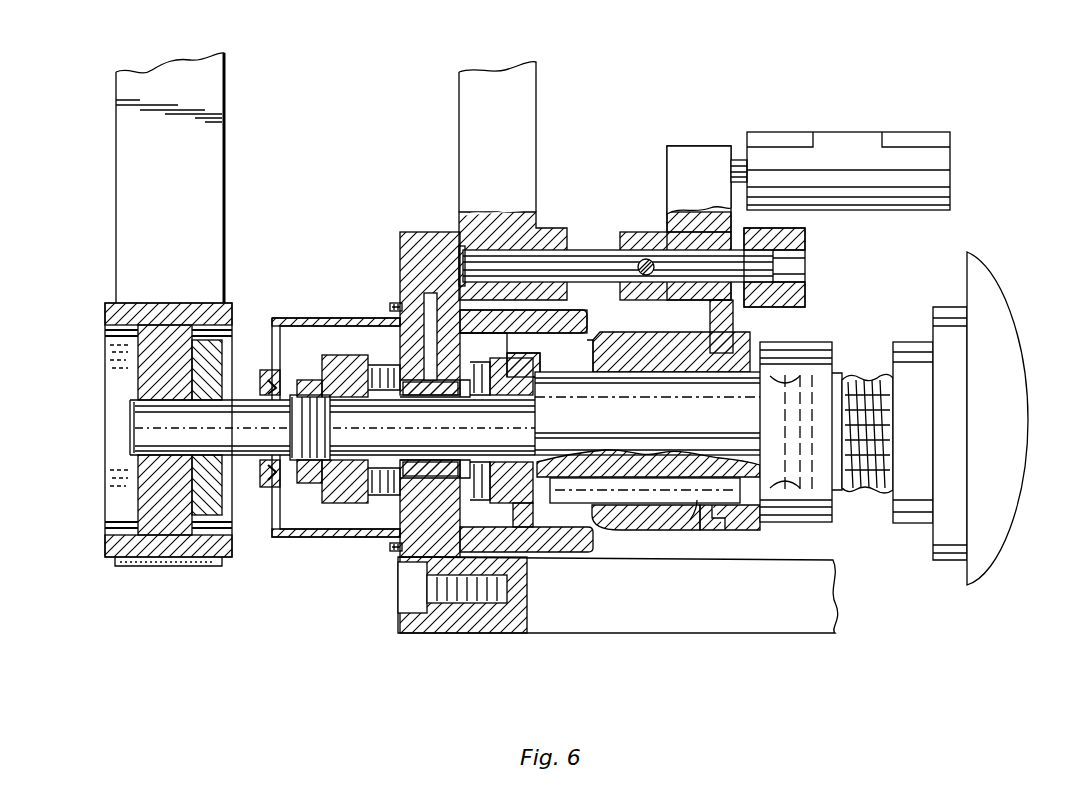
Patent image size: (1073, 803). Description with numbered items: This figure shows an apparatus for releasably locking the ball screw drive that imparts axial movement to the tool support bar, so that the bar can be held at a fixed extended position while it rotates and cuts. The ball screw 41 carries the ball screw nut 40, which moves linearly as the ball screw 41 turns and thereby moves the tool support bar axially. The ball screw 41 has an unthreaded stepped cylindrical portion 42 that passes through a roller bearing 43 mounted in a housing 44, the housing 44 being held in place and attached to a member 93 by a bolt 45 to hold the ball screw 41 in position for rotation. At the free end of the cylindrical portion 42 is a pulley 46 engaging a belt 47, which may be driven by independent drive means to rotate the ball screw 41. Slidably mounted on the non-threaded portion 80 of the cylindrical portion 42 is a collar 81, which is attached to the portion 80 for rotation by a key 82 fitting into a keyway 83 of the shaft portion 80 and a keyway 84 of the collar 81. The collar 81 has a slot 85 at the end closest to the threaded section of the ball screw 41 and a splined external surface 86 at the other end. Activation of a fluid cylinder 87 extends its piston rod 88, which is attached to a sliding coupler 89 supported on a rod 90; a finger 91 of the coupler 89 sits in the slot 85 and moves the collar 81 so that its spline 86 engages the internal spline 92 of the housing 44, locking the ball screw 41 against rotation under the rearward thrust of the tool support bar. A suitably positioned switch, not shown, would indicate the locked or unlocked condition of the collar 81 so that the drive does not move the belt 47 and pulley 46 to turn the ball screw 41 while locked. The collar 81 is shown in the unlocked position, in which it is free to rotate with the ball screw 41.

The ball screw nut 40 is at (945, 565).
The ball screw 41 is at (858, 494).
The unthreaded stepped cylindrical portion 42 is at (243, 453).
The roller bearing 43 is at (420, 473).
The housing 44 is at (420, 232).
The bolt 45 is at (405, 598).
The pulley 46 is at (168, 560).
The belt 47 is at (210, 194).
The non-threaded portion 80 is at (580, 406).
The collar 81 is at (700, 530).
The key 82 is at (623, 500).
The keyway 83 is at (668, 482).
The keyway 84 is at (697, 503).
The slot 85 is at (730, 530).
The splined external surface 86 is at (645, 533).
The fluid cylinder 87 is at (856, 140).
The piston rod 88 is at (742, 158).
The sliding coupler 89 is at (698, 148).
The rod 90 is at (590, 250).
The finger 91 is at (733, 323).
The internal spline 92 is at (560, 518).
The member 93 is at (540, 635).